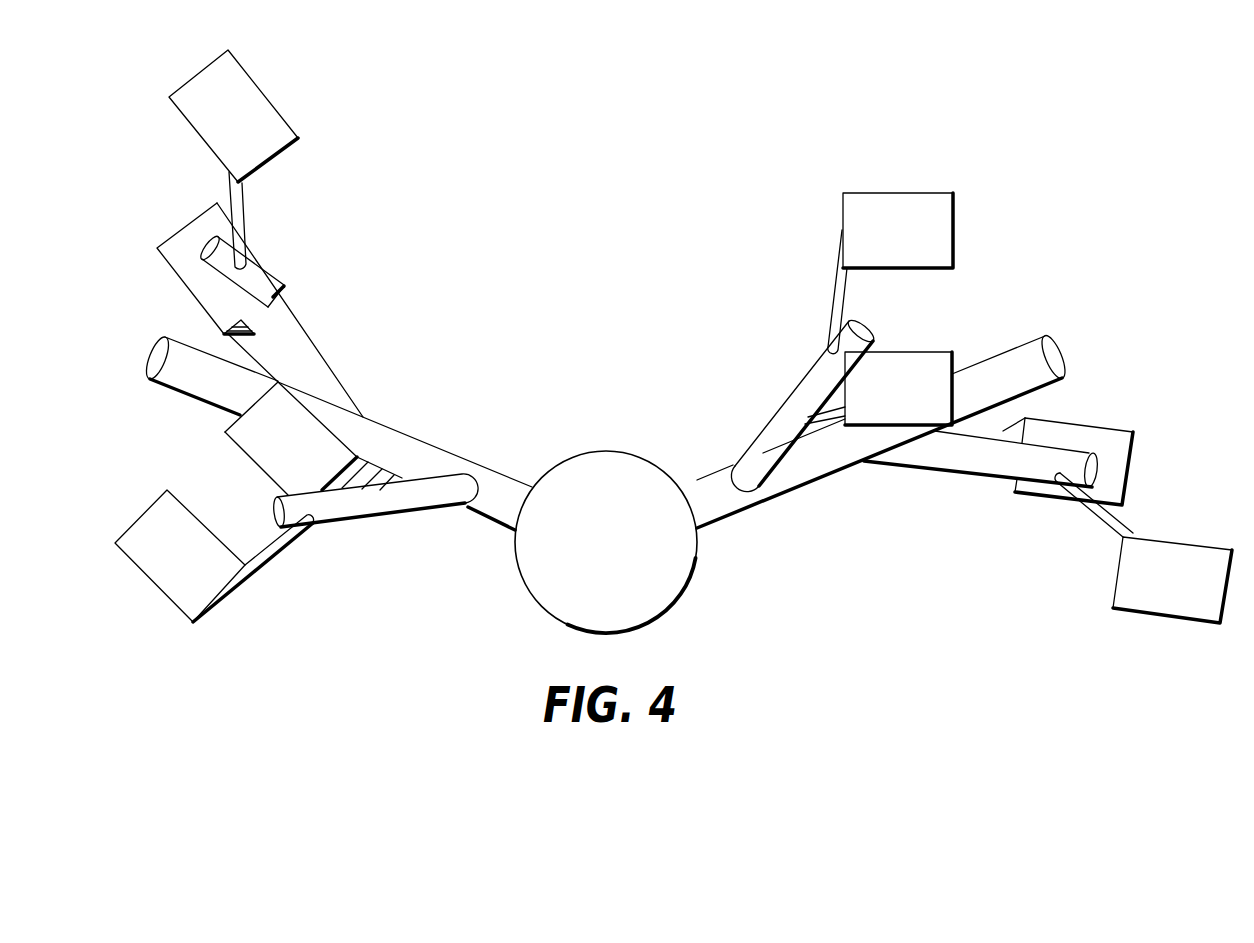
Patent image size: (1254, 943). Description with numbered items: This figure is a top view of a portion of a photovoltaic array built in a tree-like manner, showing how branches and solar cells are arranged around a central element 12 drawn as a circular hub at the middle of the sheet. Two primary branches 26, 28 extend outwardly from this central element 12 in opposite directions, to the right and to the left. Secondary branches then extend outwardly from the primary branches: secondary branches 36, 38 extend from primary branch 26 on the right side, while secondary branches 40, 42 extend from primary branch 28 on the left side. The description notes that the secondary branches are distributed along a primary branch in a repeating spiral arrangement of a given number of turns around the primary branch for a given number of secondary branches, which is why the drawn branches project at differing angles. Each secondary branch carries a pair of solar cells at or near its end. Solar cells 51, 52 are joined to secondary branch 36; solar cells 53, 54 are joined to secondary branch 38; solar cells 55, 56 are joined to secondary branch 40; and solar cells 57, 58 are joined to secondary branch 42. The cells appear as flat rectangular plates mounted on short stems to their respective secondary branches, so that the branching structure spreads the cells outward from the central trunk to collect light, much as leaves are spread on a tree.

The central hub 12 is at (607, 450).
The primary branch 26 is at (805, 487).
The primary branch 28 is at (425, 442).
The secondary branch 36 is at (962, 473).
The secondary branch 38 is at (788, 397).
The secondary branch 40 is at (377, 518).
The secondary branch 42 is at (309, 336).
The solar cell 51 is at (1088, 423).
The solar cell 52 is at (1167, 620).
The solar cell 53 is at (923, 348).
The solar cell 54 is at (897, 198).
The solar cell 55 is at (157, 578).
The solar cell 56 is at (247, 455).
The solar cell 57 is at (260, 252).
The solar cell 58 is at (263, 90).